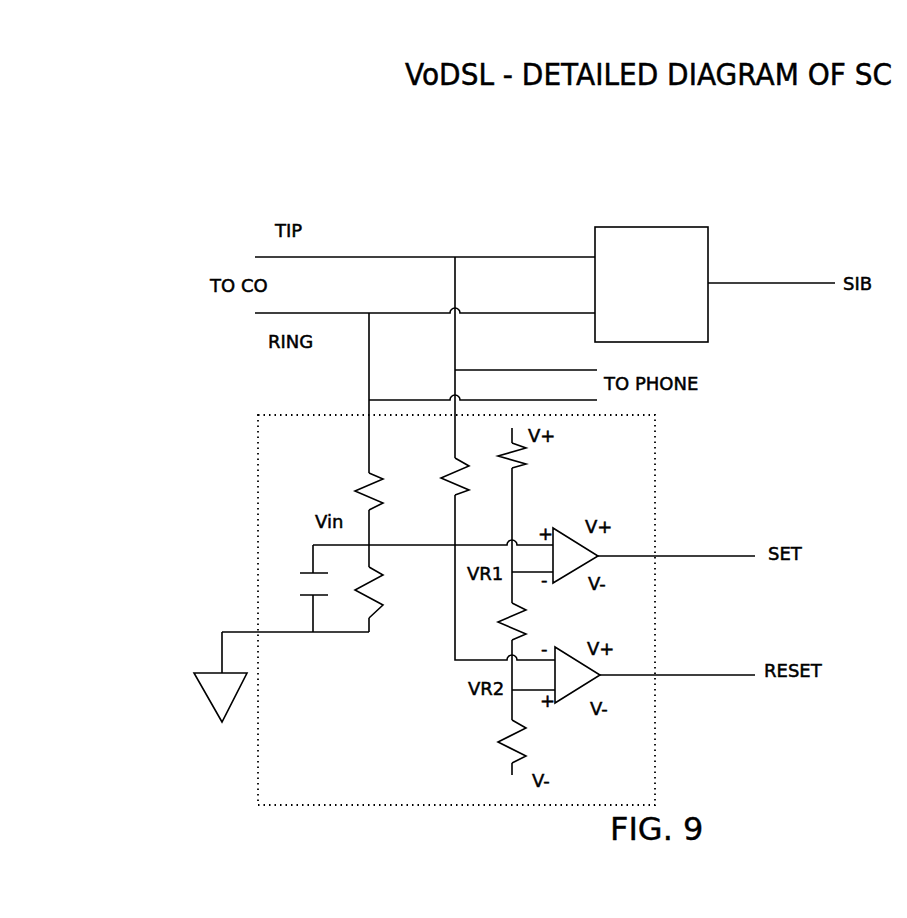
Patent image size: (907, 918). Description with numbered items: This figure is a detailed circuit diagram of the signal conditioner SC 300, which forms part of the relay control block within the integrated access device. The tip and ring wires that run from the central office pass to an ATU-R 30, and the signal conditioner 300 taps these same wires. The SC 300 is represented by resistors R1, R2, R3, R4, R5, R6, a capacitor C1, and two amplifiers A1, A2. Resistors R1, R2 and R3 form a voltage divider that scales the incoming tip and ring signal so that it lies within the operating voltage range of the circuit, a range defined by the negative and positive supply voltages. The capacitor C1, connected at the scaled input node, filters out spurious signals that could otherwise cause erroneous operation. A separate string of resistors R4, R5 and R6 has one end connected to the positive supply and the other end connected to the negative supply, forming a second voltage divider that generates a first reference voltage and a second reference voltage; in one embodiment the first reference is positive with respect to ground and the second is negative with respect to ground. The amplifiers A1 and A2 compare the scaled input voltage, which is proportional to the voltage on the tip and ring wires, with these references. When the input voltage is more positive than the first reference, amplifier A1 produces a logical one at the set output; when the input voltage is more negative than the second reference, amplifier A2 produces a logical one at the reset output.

The ATU-R (ADSL transceiver unit - remote) 30 is at (652, 227).
The signal conditioner 300 is at (258, 795).
The resistor R1 is at (356, 491).
The resistor R2 is at (438, 476).
The resistor R3 is at (383, 592).
The resistor R4 is at (528, 458).
The resistor R5 is at (529, 621).
The resistor R6 is at (529, 741).
The capacitor C1 is at (301, 588).
The amplifier A1 is at (575, 555).
The amplifier A2 is at (577, 675).